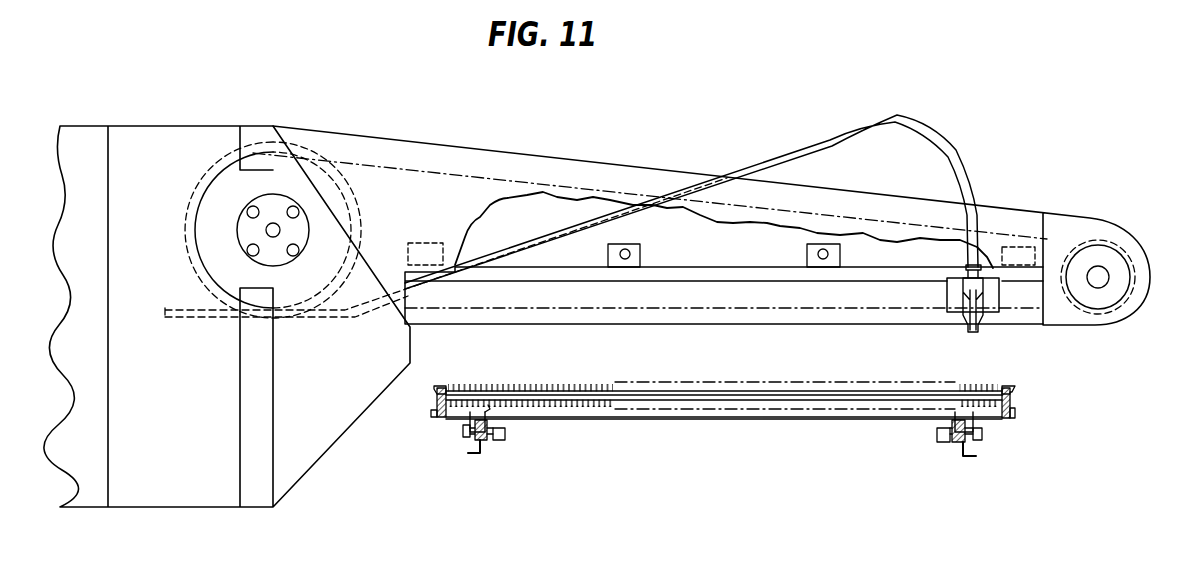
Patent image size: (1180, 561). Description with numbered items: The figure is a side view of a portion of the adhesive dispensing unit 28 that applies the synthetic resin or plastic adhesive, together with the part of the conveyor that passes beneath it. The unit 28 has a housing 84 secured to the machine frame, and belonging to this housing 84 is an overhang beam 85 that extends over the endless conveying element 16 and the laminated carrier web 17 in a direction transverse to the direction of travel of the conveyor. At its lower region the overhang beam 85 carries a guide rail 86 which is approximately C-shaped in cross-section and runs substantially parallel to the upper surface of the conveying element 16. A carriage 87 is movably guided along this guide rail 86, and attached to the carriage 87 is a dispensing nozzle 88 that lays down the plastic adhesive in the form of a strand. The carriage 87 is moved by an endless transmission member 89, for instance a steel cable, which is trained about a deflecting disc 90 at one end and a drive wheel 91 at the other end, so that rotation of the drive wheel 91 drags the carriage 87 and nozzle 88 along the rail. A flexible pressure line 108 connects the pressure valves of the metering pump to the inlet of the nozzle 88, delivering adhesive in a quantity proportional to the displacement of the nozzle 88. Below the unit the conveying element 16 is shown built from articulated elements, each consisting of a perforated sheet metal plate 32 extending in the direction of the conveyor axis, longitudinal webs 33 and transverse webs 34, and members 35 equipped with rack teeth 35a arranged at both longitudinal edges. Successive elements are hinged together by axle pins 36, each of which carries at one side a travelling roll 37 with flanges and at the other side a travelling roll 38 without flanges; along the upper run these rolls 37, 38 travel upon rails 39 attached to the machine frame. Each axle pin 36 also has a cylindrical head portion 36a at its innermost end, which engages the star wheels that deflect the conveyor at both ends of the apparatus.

The endless conveying element 16 is at (632, 388).
The laminated carrier web 17 is at (567, 390).
The adhesive dispensing unit 28 is at (371, 133).
The perforated sheet metal plate 32 is at (740, 398).
The longitudinal web 33 is at (957, 423).
The transverse web 34 is at (680, 413).
The rack-toothed member 35 is at (1013, 398).
The rack teeth 35a is at (1016, 414).
The axle pin 36 is at (982, 435).
The cylindrical head portion 36a is at (947, 441).
The flanged travelling roll 37 is at (488, 412).
The travelling roll without flanges 38 is at (952, 431).
The rail 39 is at (965, 460).
The housing 84 is at (140, 152).
The overhang beam 85 is at (504, 154).
The guide rail 86 is at (475, 285).
The carriage 87 is at (957, 305).
The dispensing nozzle 88 is at (976, 327).
The endless transmission member 89 is at (442, 165).
The deflecting disc 90 is at (1098, 303).
The drive wheel 91 is at (217, 158).
The flexible pressure line 108 is at (565, 238).